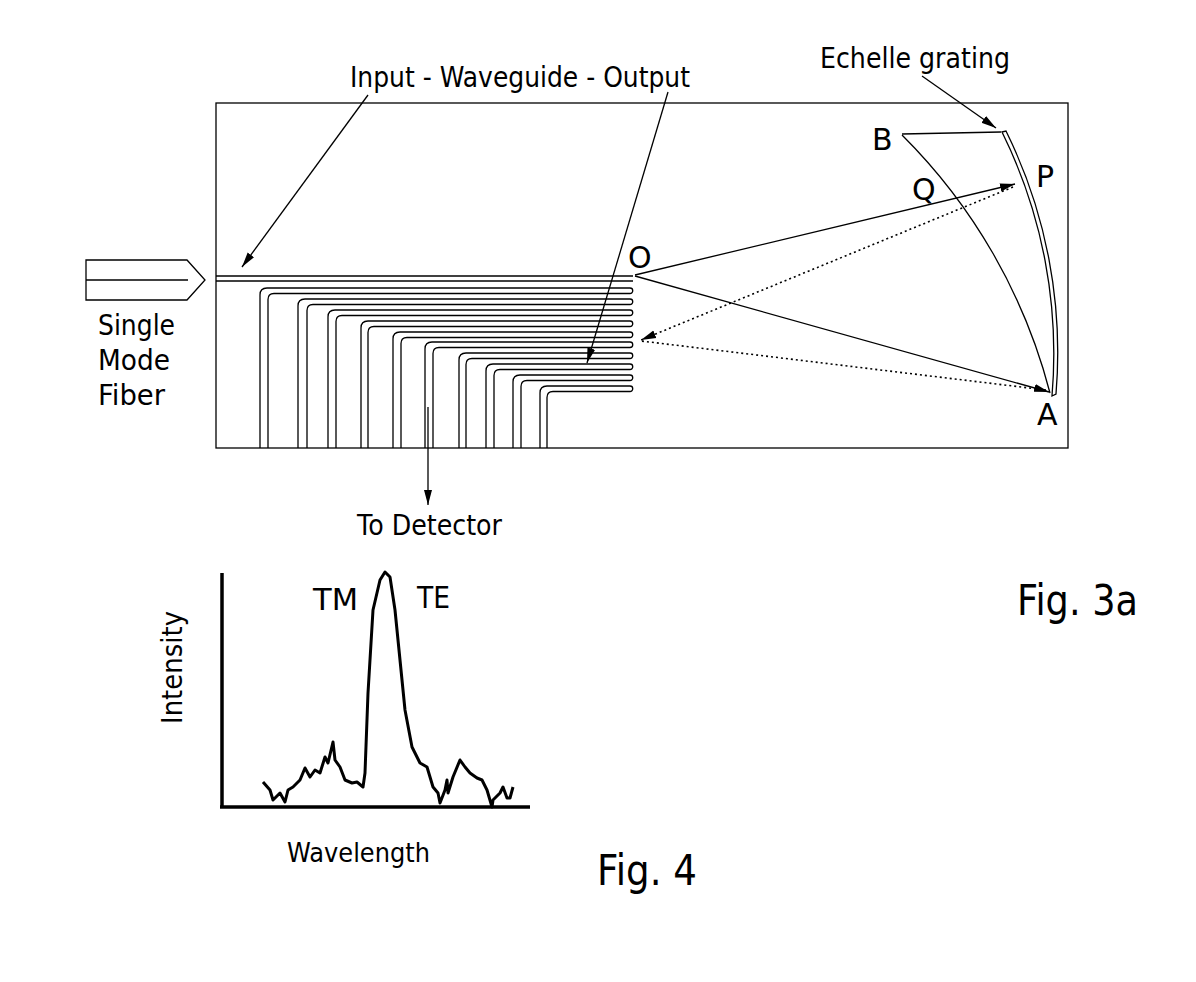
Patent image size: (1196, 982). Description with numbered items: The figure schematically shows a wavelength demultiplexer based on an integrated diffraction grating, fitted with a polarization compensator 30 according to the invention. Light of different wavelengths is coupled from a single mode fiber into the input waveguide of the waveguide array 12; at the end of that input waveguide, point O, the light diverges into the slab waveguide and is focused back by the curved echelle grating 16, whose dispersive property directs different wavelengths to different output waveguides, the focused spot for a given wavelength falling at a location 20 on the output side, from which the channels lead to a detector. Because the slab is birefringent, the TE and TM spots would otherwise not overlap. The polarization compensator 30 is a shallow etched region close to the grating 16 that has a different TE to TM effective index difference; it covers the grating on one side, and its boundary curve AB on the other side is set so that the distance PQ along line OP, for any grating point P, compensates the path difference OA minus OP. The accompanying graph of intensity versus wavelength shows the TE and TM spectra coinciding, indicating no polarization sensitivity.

The input/output waveguide array 12 is at (322, 277).
The etched diffraction grating 16 is at (1037, 225).
The location of focused spot 20 is at (633, 373).
The polarization compensator 30 is at (985, 240).